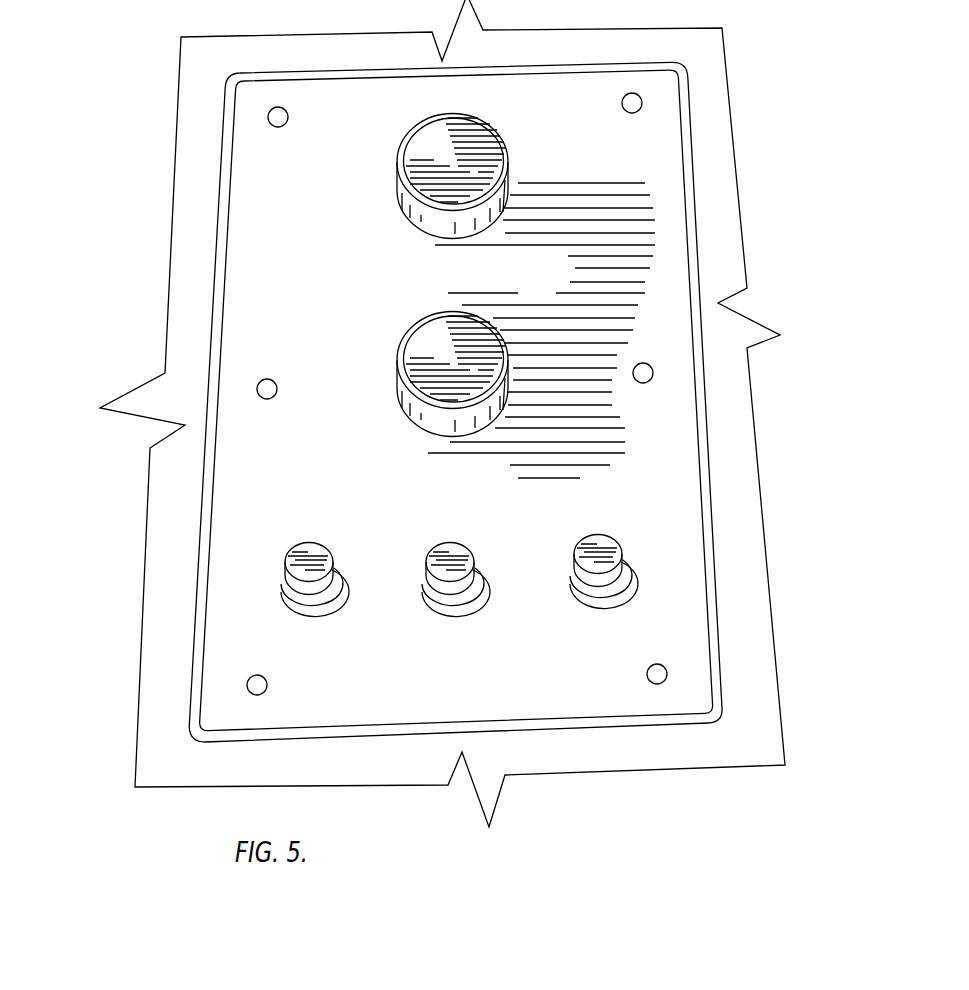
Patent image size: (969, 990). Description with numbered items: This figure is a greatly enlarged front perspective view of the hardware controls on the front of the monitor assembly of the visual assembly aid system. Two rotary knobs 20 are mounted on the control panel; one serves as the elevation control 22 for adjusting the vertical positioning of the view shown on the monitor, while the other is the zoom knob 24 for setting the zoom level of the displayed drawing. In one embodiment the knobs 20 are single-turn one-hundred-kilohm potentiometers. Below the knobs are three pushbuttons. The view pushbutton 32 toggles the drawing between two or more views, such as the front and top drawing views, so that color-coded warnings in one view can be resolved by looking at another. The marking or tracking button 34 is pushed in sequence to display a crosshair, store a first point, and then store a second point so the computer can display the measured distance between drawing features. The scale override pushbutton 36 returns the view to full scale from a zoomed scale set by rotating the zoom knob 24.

The rotary knobs 20 is at (363, 126).
The elevation control 22 is at (507, 192).
The zoom knob 24 is at (507, 397).
The pushbutton 32 is at (285, 565).
The tracking button 34 is at (482, 578).
The scale override pushbutton 36 is at (628, 578).